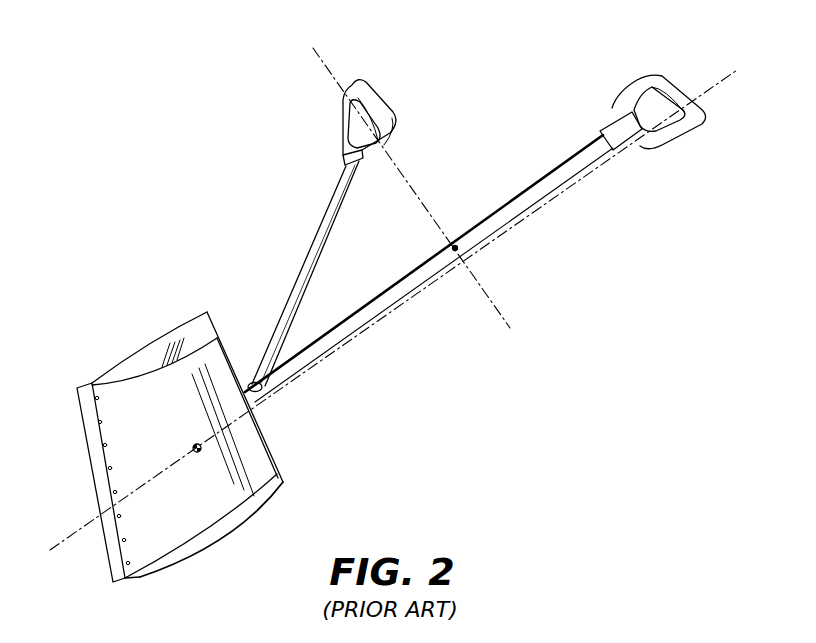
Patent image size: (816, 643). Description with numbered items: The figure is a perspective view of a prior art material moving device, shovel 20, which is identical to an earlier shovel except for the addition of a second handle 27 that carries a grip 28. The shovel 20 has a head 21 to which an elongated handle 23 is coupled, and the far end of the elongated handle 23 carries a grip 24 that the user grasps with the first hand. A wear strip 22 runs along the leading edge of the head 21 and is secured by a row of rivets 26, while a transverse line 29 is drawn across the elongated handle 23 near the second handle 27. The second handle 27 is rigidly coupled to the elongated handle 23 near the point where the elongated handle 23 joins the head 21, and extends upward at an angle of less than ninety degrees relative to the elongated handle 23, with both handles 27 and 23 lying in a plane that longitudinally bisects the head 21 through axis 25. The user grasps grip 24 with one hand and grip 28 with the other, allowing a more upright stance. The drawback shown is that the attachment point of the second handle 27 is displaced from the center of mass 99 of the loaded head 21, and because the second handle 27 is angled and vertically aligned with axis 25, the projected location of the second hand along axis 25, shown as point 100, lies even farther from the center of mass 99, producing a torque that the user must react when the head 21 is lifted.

The shovel 20 is at (126, 108).
The head 21 is at (143, 390).
The wear strip 22 is at (97, 462).
The elongated handle 23 is at (555, 167).
The grip 24 is at (660, 74).
The axis 25 is at (727, 77).
The rivets 26 is at (100, 421).
The second handle 27 is at (307, 253).
The grip 28 is at (370, 90).
The transverse line 29 is at (503, 308).
The center of mass 99 is at (197, 443).
The point 100 is at (455, 246).